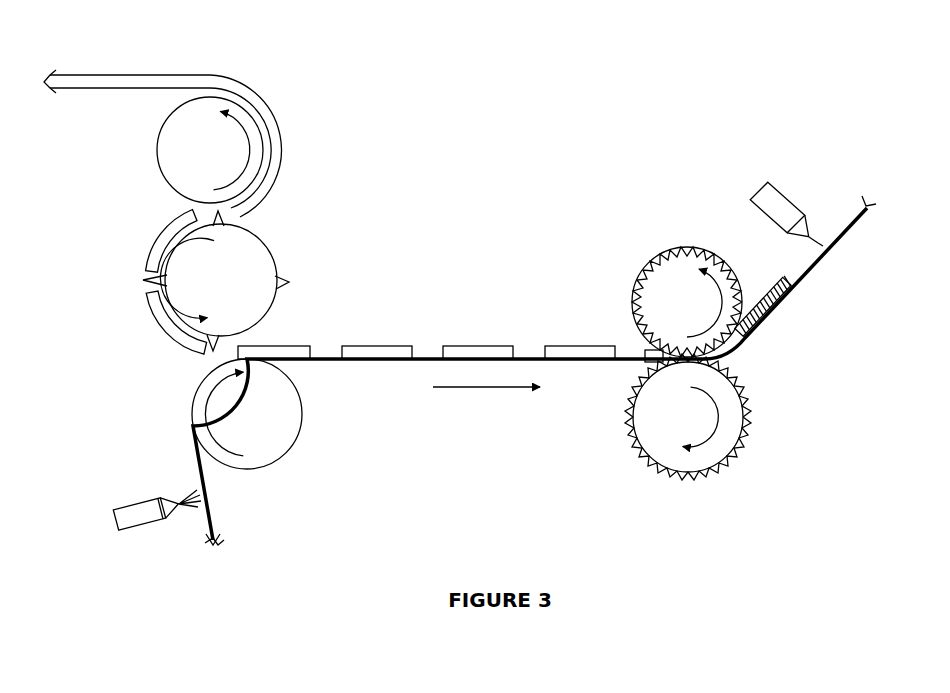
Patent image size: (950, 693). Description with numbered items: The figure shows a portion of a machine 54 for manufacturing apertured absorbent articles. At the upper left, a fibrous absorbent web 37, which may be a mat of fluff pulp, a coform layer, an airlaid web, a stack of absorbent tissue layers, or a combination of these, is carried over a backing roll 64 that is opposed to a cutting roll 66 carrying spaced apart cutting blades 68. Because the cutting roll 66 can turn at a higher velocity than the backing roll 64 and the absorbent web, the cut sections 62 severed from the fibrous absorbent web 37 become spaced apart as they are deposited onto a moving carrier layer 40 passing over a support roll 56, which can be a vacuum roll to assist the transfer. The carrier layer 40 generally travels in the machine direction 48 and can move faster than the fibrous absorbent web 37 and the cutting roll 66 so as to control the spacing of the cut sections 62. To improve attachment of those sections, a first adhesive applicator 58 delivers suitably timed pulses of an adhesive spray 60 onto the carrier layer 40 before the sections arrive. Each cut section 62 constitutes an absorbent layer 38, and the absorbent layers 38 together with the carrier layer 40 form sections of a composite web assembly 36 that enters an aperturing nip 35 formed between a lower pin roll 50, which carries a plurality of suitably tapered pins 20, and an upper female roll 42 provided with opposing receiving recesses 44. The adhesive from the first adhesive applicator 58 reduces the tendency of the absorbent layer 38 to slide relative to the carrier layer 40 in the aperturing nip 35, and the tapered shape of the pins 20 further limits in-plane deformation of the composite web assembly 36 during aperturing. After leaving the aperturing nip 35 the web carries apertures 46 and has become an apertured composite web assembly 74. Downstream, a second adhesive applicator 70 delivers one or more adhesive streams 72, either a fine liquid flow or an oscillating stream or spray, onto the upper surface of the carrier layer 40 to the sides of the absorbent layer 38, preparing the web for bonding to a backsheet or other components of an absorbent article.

The machine 54 is at (158, 56).
The fibrous absorbent web 37 is at (72, 90).
The backing roll 64 is at (158, 148).
The cutting roll 66 is at (150, 300).
The pins 68 is at (286, 280).
The support roll 56 is at (285, 455).
The carrier layer 40 is at (188, 418).
The first adhesive applicator 58 is at (108, 503).
The adhesive spray 60 is at (192, 507).
The absorbent layer 38 is at (478, 346).
The cut sections 62 is at (426, 352).
The machine direction 48 is at (478, 392).
The upper female roll 42 is at (653, 262).
The receiving recesses 44 is at (633, 303).
The composite web assembly 36 is at (647, 352).
The aperturing nip 35 is at (640, 369).
The lower pin roll 50 is at (727, 462).
The tapered pins 20 is at (632, 437).
The apertures 46 is at (770, 318).
The apertured composite web assembly 74 is at (788, 298).
The second adhesive applicator 70 is at (762, 183).
The adhesive streams 72 is at (817, 240).